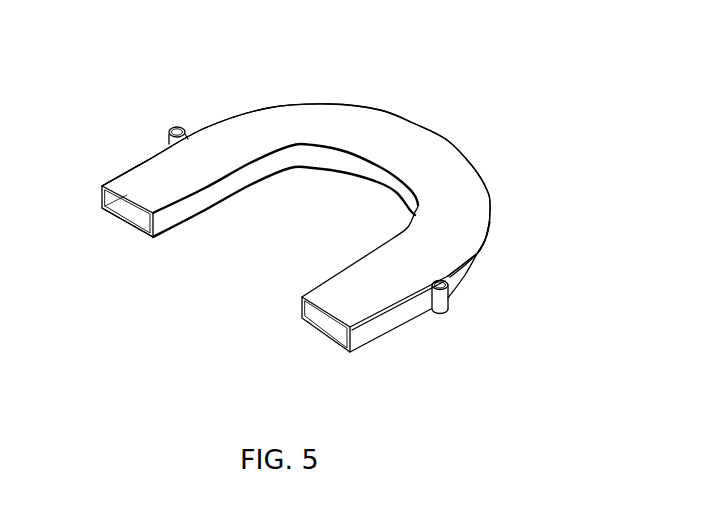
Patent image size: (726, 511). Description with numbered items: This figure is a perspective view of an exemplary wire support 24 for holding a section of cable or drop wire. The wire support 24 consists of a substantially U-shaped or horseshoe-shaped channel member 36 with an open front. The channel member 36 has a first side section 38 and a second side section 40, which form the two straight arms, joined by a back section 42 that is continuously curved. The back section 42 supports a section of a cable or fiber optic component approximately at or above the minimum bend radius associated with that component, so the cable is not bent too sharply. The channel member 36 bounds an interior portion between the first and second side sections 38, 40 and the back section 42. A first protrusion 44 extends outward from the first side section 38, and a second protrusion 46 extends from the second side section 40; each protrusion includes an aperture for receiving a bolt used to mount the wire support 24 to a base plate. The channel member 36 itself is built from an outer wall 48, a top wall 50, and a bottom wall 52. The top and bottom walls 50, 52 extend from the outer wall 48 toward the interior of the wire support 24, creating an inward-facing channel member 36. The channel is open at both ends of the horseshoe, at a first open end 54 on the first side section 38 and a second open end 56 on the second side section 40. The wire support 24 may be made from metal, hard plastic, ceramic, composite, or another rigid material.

The wire support 24 is at (516, 106).
The channel member 36 is at (267, 105).
The first side section 38 is at (133, 176).
The second side section 40 is at (358, 305).
The back section 42 is at (400, 131).
The first protrusion 44 is at (172, 128).
The second protrusion 46 is at (447, 307).
The outer wall 48 is at (465, 270).
The top wall 50 is at (467, 212).
The bottom wall 52 is at (183, 222).
The first open end 54 is at (123, 208).
The second open end 56 is at (336, 334).